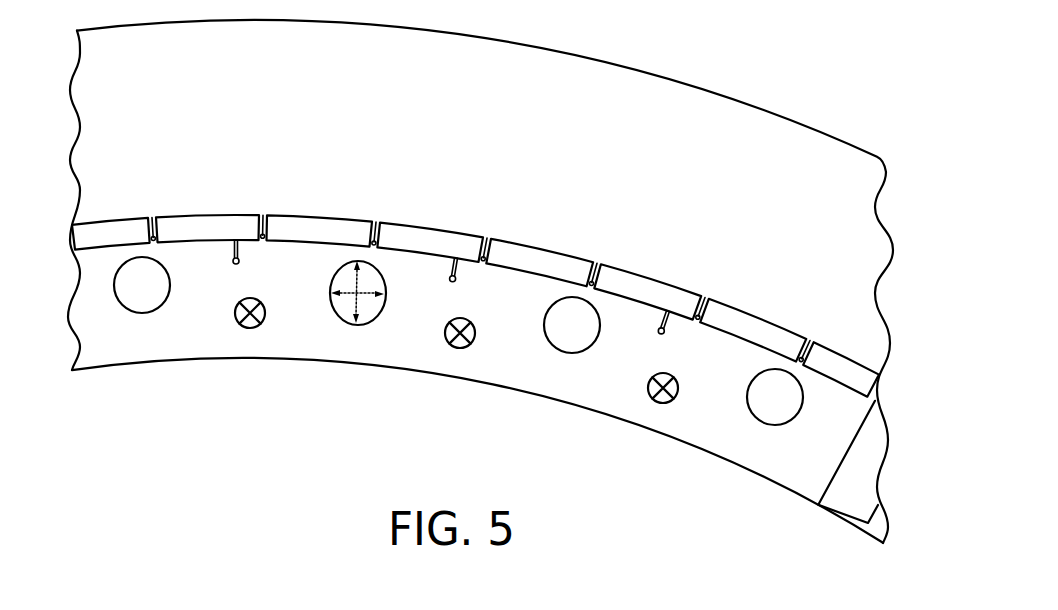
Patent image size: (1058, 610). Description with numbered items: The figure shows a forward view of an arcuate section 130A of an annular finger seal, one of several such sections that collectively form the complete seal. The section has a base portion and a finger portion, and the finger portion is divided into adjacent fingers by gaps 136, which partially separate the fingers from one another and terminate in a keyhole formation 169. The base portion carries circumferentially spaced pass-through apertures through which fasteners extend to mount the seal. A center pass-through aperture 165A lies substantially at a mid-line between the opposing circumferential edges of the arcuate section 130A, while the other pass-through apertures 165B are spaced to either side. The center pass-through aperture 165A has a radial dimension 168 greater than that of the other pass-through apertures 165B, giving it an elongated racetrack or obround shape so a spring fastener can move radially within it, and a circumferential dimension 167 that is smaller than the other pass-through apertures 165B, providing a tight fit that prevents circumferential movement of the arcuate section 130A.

The arcuate section 130A is at (262, 180).
The gaps 136 is at (152, 214).
The center pass-through aperture 165A is at (372, 323).
The other pass-through apertures 165B is at (150, 298).
The circumferential dimension 167 is at (343, 308).
The radial dimension 168 is at (362, 316).
The keyhole formation 169 is at (233, 264).